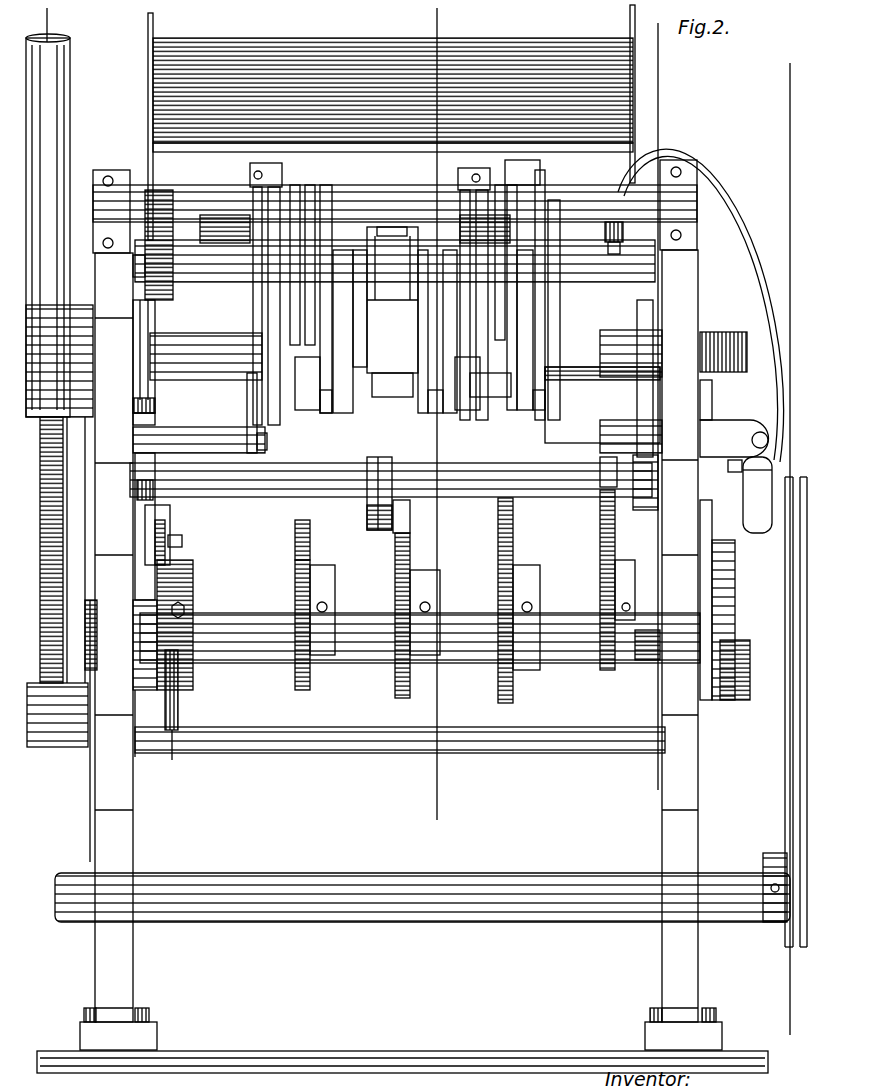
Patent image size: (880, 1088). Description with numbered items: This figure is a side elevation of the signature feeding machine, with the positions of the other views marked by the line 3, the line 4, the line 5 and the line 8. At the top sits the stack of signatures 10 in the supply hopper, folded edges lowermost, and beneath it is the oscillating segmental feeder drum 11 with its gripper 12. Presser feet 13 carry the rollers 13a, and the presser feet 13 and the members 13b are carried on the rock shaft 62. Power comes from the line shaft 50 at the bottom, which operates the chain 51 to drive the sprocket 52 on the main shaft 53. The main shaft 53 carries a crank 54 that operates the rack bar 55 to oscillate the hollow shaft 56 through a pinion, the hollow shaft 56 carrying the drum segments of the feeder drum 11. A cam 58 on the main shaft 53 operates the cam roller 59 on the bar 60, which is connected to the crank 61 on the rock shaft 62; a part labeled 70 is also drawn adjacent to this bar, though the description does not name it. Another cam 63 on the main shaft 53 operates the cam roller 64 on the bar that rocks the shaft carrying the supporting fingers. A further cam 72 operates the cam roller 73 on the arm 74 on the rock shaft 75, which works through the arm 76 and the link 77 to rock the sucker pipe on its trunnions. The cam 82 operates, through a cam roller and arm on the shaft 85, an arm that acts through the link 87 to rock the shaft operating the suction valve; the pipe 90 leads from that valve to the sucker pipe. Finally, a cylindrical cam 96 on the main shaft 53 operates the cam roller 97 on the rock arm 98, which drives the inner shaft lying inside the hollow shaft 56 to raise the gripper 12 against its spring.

The line 3 is at (802, 98).
The line 4 is at (690, 42).
The line 5 is at (458, 22).
The line 8 is at (77, 23).
The stack of signatures 10 is at (285, 50).
The oscillating segmental feeder drum 11 is at (388, 385).
The gripper 12 is at (388, 230).
The presser feet 13 is at (485, 260).
The rollers 13a is at (497, 383).
The members 13b is at (313, 415).
The line shaft 50 is at (528, 878).
The chain 51 is at (795, 793).
The sprocket 52 is at (785, 703).
The main shaft 53 is at (585, 613).
The crank 54 is at (78, 632).
The rack bar 55 is at (42, 465).
The hollow shaft 56 is at (578, 365).
The cam 58 is at (157, 577).
The cam roller 59 is at (168, 513).
The bar 60 is at (152, 393).
The crank 61 is at (150, 232).
The rock shaft 62 is at (197, 207).
The cam 63 is at (302, 556).
The cam roller 64 is at (310, 525).
The rod 70 is at (122, 317).
The cam 72 is at (397, 557).
The cam roller 73 is at (407, 512).
The arm 74 is at (390, 487).
The rock shaft 75 is at (473, 475).
The arm 76 is at (652, 495).
The link 77 is at (650, 397).
The cam 82 is at (513, 545).
The shaft 85 is at (645, 647).
The link 87 is at (605, 542).
The pipe 90 is at (748, 214).
The cylindrical cam 96 is at (730, 670).
The cam roller 97 is at (768, 530).
The rock arm 98 is at (760, 402).